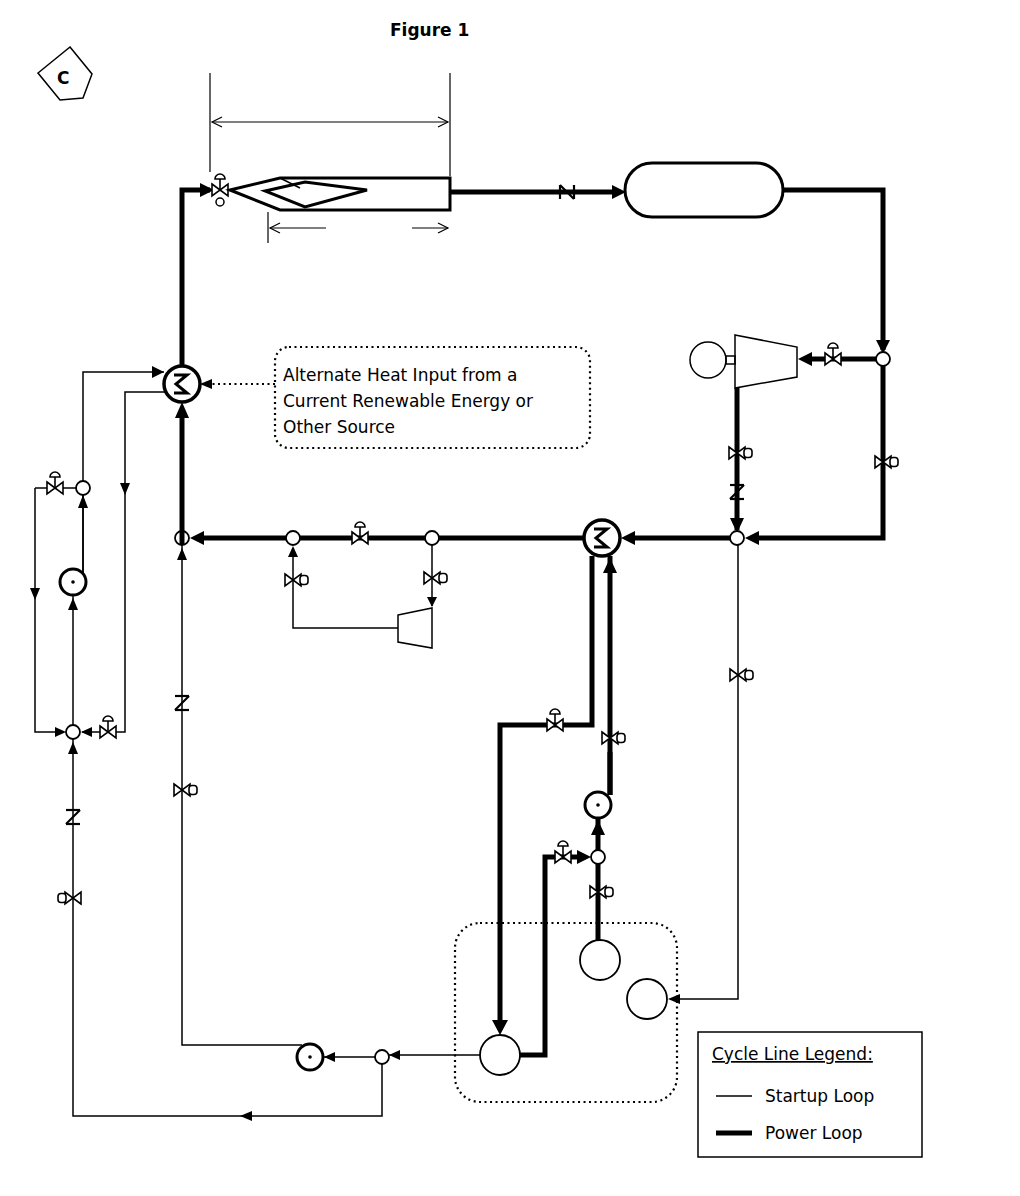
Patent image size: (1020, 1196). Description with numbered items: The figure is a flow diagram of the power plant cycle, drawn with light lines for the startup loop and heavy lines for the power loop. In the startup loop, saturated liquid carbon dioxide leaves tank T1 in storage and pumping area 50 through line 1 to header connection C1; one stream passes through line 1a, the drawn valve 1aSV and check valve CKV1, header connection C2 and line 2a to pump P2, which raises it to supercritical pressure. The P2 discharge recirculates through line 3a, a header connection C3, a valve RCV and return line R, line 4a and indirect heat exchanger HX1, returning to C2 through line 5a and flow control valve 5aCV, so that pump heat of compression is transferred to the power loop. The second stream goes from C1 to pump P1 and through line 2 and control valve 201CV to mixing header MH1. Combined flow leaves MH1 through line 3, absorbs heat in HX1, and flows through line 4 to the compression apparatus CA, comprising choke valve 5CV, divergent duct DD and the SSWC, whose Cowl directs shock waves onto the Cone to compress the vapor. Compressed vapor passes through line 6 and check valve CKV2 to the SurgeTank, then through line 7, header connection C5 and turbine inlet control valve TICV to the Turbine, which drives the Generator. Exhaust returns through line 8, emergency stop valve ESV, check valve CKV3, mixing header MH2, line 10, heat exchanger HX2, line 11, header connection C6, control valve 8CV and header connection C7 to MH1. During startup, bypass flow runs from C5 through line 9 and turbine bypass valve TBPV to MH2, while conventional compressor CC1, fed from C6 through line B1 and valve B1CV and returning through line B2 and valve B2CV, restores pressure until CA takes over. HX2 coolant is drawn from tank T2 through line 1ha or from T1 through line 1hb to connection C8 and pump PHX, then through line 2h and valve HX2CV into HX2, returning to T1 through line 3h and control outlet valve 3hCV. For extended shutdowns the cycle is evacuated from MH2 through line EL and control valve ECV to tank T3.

The line 4 is at (177, 364).
The choke valve 5CV is at (217, 200).
The divergent duct DD is at (259, 206).
The cone Cone is at (305, 184).
The cowl Cowl is at (278, 182).
The compression apparatus CA is at (330, 124).
The element SSWC is at (358, 227).
The line 6 is at (490, 191).
The check valve CKV2 is at (566, 186).
The surge tank SurgeTank is at (734, 162).
The line 7 is at (848, 190).
The header connection C5 is at (875, 365).
The turbine inlet control valve TICV is at (831, 347).
The turbine Turbine is at (784, 346).
The generator Generator is at (699, 346).
The line 8 is at (745, 421).
The emergency stop valve ESV is at (727, 451).
The check valve CKV3 is at (746, 490).
The line 9 is at (878, 425).
The turbine bypass valve TBPV is at (867, 470).
The mixing header MH2 is at (742, 546).
The line 10 is at (700, 549).
The indirect heat exchanger HX2 is at (607, 521).
The line 11 is at (498, 535).
The header connection C7 is at (296, 530).
The control valve 8CV is at (360, 526).
The header connection C6 is at (436, 530).
The line B1 is at (438, 553).
The control valve B1CV is at (447, 583).
The conventional compressor CC1 is at (410, 650).
The line B2 is at (350, 627).
The control valve B2CV is at (285, 590).
The mixing header MH1 is at (190, 533).
The line 3 is at (190, 438).
The indirect heat exchanger HX1 is at (194, 369).
The line 4a is at (130, 370).
The connection C3 is at (77, 496).
The line 3a is at (86, 530).
The recirculation control valve RCV is at (52, 478).
The return line R is at (31, 560).
The line 5a is at (158, 398).
The flow control valve 5aCV is at (104, 742).
The pump P2 is at (80, 598).
The line 2a is at (70, 648).
The header connection C2 is at (66, 741).
The line 1a is at (387, 1092).
The check valve CKV1 is at (82, 818).
The shutoff valve 1aSV is at (80, 900).
The header connection C1 is at (376, 1049).
The line 1 is at (415, 1058).
The pump P1 is at (305, 1045).
The line 2 is at (186, 915).
The control valve 201CV is at (194, 791).
The line 3h is at (585, 604).
The control outlet valve 3hCV is at (548, 714).
The control valve HX2CV is at (624, 737).
The line 2h is at (617, 781).
The pump PHX is at (612, 807).
The connection C8 is at (607, 855).
The line 1hb is at (560, 845).
The line 1ha is at (604, 915).
The storage tank T1 is at (500, 1055).
The storage tank T2 is at (600, 960).
The storage tank T3 is at (647, 999).
The storage and pumping area 50 is at (461, 942).
The line EL is at (742, 618).
The control valve ECV is at (754, 679).